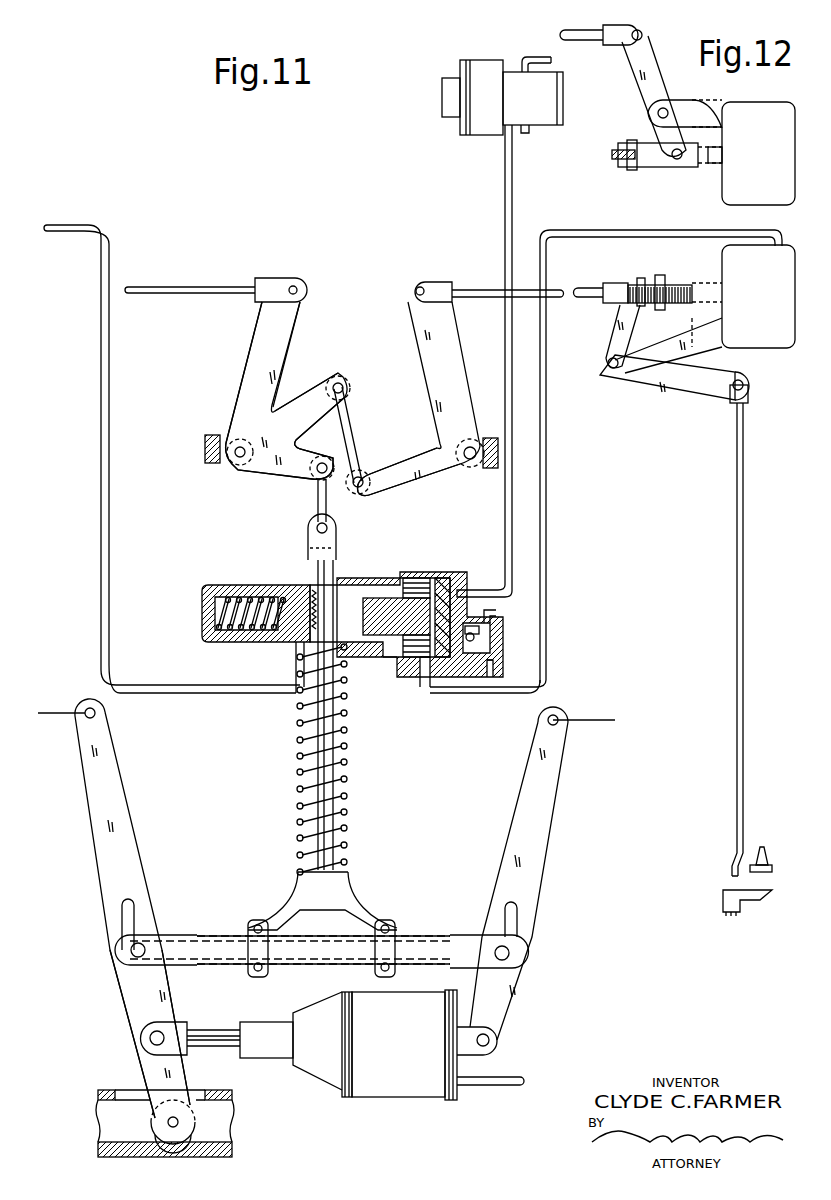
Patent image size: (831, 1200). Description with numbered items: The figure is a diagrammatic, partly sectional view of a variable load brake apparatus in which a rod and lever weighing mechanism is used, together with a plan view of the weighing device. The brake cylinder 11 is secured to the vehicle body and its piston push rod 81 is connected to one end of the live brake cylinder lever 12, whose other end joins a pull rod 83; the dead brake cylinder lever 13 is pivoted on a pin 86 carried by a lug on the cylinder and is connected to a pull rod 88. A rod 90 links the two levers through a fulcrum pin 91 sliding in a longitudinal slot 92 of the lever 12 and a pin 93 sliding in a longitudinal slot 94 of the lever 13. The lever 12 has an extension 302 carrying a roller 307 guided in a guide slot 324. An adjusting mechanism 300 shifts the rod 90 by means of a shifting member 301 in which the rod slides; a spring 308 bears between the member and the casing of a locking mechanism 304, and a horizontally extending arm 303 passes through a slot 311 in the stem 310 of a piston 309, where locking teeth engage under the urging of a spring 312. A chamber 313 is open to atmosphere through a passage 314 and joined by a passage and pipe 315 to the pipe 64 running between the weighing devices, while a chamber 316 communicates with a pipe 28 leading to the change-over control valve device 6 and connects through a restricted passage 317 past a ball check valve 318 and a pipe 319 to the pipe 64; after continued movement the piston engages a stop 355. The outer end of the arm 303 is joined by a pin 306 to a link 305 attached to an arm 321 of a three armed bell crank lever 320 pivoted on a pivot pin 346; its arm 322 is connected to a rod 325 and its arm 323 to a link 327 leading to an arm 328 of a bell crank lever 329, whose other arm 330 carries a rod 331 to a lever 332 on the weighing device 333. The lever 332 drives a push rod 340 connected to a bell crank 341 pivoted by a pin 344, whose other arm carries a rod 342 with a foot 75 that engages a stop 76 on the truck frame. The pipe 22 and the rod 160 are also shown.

In FIG. 11, the change-over control valve device 6 is at (476, 66).
In FIG. 11, the pipe 22 is at (533, 57).
In FIG. 11, the pipe 28 is at (540, 509).
In FIG. 11, the rod 325 is at (162, 290).
In FIG. 11, the three armed bell crank lever 320 is at (236, 423).
In FIG. 11, the arm 322 is at (300, 336).
In FIG. 11, the arm 323 is at (310, 396).
In FIG. 11, the arm 321 is at (268, 463).
In FIG. 11, the pivot pin 346 is at (238, 455).
In FIG. 11, the link 327 is at (361, 442).
In FIG. 11, the rod 331 is at (478, 286).
In FIG. 12, the rod 331 is at (598, 22).
In FIG. 11, the arm 330 is at (446, 344).
In FIG. 11, the arm 328 is at (414, 485).
In FIG. 11, the bell crank lever 329 is at (471, 420).
In FIG. 11, the link 305 is at (328, 503).
In FIG. 11, the pin 306 is at (316, 528).
In FIG. 11, the slot or opening 311 is at (342, 605).
In FIG. 11, the horizontally extending arm 303 is at (340, 782).
In FIG. 11, the locking mechanism 304 is at (372, 592).
In FIG. 11, the spring 312 is at (258, 645).
In FIG. 11, the stop 355 is at (396, 616).
In FIG. 11, the chamber 313 is at (418, 577).
In FIG. 11, the stem 310 is at (386, 650).
In FIG. 11, the piston 309 is at (448, 578).
In FIG. 11, the chamber 316 is at (468, 592).
In FIG. 11, the restricted passage 317 is at (492, 612).
In FIG. 11, the ball check valve 318 is at (480, 637).
In FIG. 11, the passage 314 is at (398, 657).
In FIG. 11, the passage and pipe 315 is at (425, 666).
In FIG. 11, the pipe 64 is at (466, 694).
In FIG. 11, the pipe 319 is at (494, 690).
In FIG. 11, the spring 308 is at (346, 750).
In FIG. 11, the adjusting mechanism 300 is at (353, 868).
In FIG. 11, the shifting member 301 is at (366, 897).
In FIG. 11, the rod 90 is at (414, 940).
In FIG. 11, the fulcrum pin 91 is at (131, 950).
In FIG. 11, the longitudinal slot 92 is at (128, 912).
In FIG. 11, the pin 93 is at (510, 954).
In FIG. 11, the longitudinal slot 94 is at (517, 922).
In FIG. 11, the live or floating brake cylinder lever 12 is at (113, 765).
In FIG. 11, the pull rod 83 is at (51, 722).
In FIG. 11, the extension 302 is at (152, 1064).
In FIG. 11, the roller 307 is at (158, 1122).
In FIG. 11, the guide slot 324 is at (192, 1150).
In FIG. 11, the dead brake cylinder lever 13 is at (545, 834).
In FIG. 11, the pull rod 88 is at (598, 728).
In FIG. 11, the pin 86 is at (497, 1048).
In FIG. 11, the brake cylinder 11 is at (398, 1090).
In FIG. 11, the push rod 81 is at (221, 1042).
In FIG. 11, the rod 160 is at (498, 1083).
In FIG. 12, the lever 332 is at (636, 58).
In FIG. 12, the push rod 340 is at (690, 163).
In FIG. 12, the bell crank 341 is at (617, 160).
In FIG. 12, the pin 344 is at (609, 369).
In FIG. 12, the weighing device 333 is at (757, 113).
In FIG. 12, the rod 342 is at (743, 527).
In FIG. 12, the stop 76 is at (762, 849).
In FIG. 12, the foot 75 is at (757, 911).